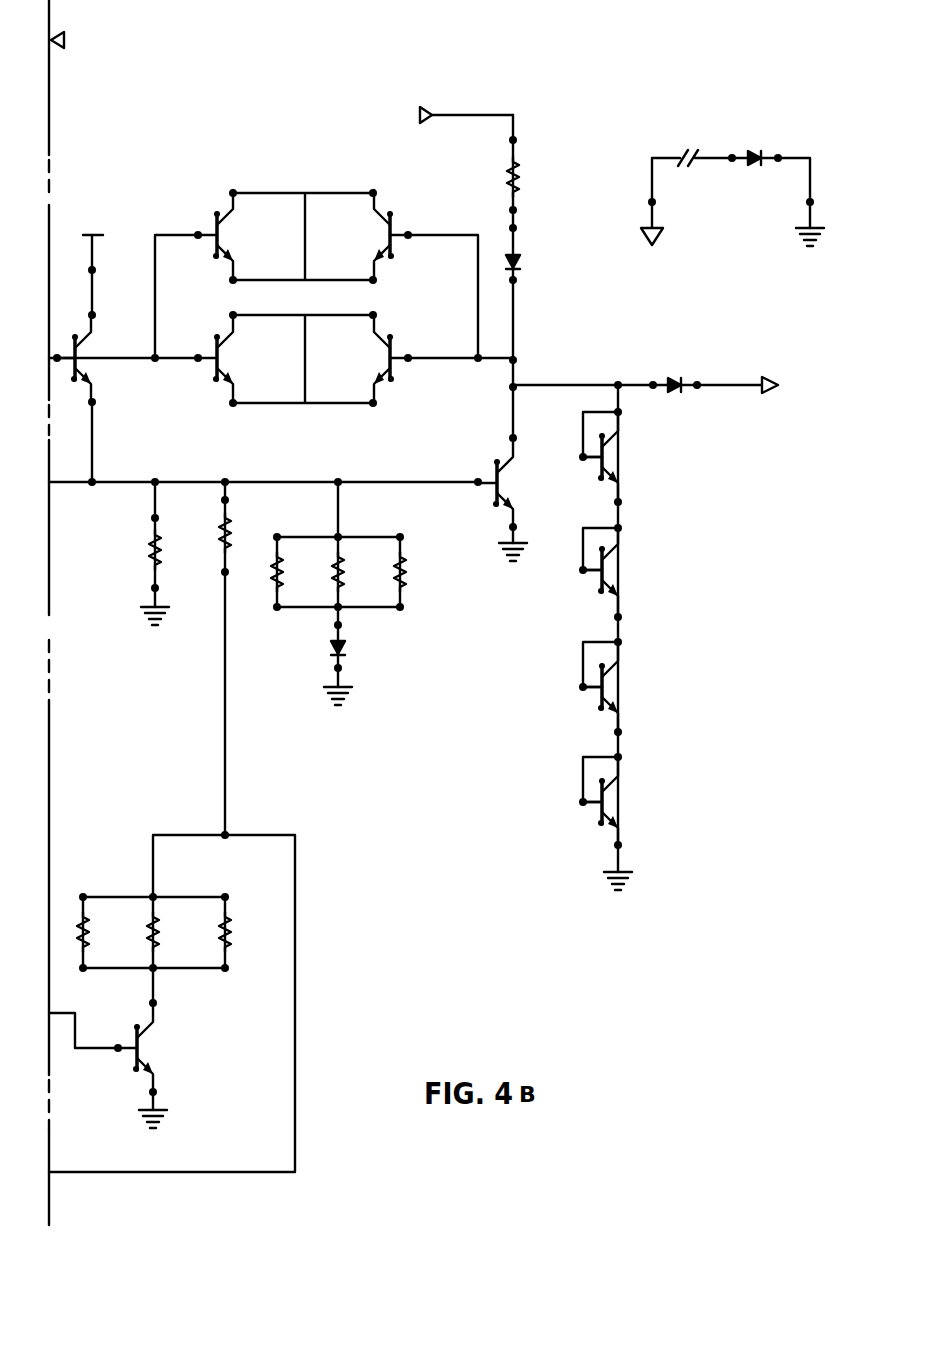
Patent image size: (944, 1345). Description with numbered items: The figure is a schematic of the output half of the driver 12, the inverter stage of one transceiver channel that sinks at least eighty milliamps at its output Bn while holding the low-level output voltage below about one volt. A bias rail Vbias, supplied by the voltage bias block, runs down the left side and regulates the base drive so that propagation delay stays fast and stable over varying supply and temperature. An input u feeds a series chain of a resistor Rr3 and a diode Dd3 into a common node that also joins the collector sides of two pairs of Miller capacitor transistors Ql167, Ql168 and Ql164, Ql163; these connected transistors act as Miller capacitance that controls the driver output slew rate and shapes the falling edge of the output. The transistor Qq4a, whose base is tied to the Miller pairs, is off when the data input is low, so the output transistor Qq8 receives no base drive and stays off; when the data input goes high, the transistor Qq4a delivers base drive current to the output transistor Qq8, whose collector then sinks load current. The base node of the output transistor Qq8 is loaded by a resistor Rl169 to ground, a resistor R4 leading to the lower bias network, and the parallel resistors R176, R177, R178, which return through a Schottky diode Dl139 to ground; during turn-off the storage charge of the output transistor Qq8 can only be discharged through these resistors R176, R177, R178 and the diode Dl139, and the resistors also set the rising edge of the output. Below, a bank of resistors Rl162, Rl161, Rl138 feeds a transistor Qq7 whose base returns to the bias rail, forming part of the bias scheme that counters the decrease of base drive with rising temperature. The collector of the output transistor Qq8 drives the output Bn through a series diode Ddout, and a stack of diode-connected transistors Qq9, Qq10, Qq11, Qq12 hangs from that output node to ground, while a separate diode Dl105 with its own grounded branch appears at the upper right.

The driver 12 is at (350, 47).
The voltage bias Vbias is at (88, 42).
The input u is at (456, 115).
The resistor Rr3 is at (534, 177).
The diode Dd3 is at (537, 264).
The Miller capacitor transistor Ql167 is at (239, 235).
The Miller capacitor transistor Ql168 is at (369, 235).
The Miller capacitor transistor Ql164 is at (239, 358).
The Miller capacitor transistor Ql163 is at (369, 358).
The transistor Qq4a is at (103, 358).
The output transistor Qq8 is at (514, 499).
The resistor Rl169 is at (129, 553).
The resistor R4 is at (209, 658).
The resistor R176 is at (301, 572).
The resistor R177 is at (363, 572).
The resistor R178 is at (425, 572).
The Schottky diode Dl139 is at (368, 663).
The resistor Rl162 is at (110, 932).
The resistor Rl161 is at (180, 932).
The resistor Rl138 is at (253, 932).
The transistor Qq7 is at (121, 1063).
The output diode Ddout is at (674, 372).
The output Bn is at (786, 386).
The transistor Qq9 is at (618, 457).
The transistor Qq10 is at (624, 572).
The transistor Qq11 is at (624, 687).
The transistor Qq12 is at (624, 821).
The diode Dl105 is at (732, 185).